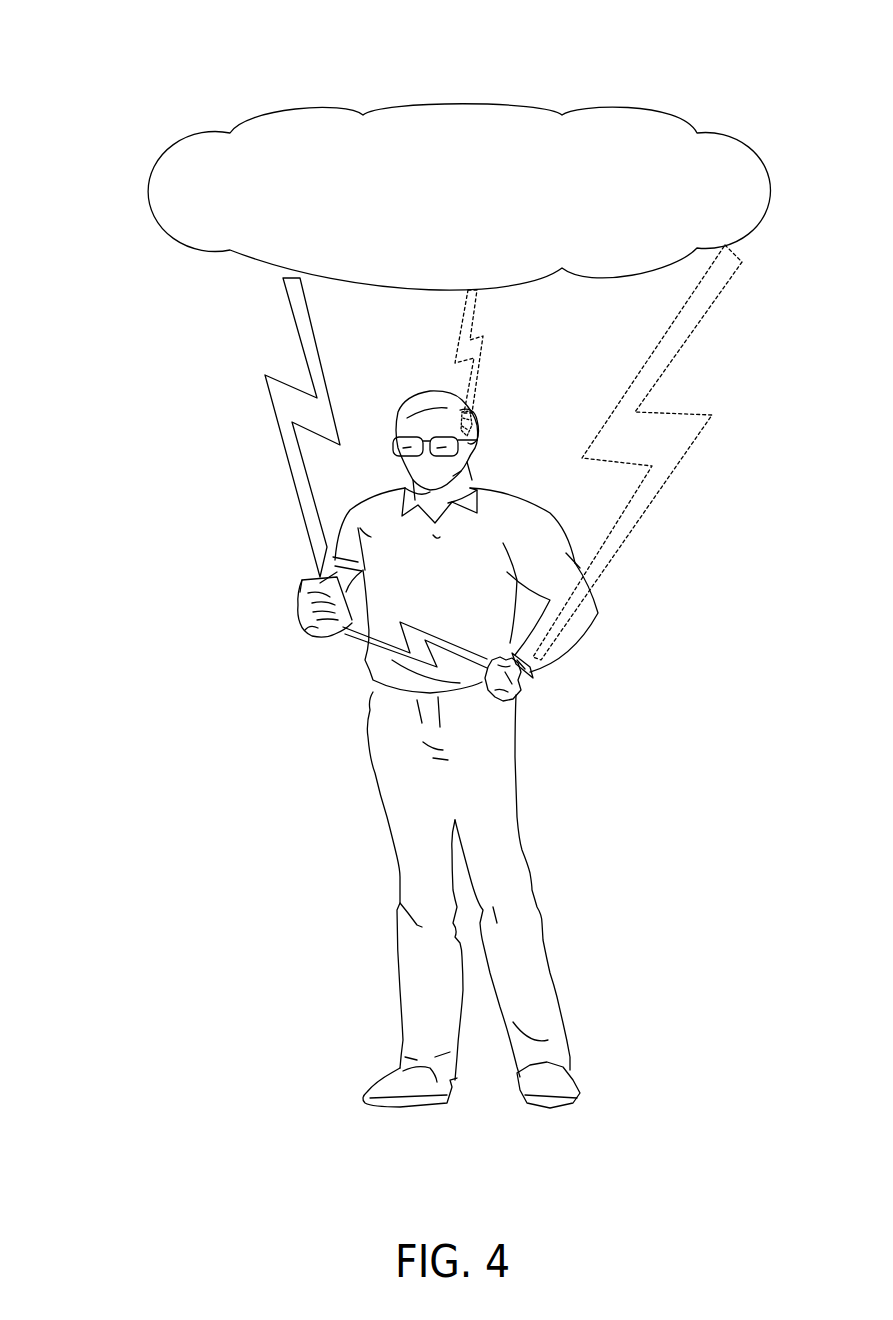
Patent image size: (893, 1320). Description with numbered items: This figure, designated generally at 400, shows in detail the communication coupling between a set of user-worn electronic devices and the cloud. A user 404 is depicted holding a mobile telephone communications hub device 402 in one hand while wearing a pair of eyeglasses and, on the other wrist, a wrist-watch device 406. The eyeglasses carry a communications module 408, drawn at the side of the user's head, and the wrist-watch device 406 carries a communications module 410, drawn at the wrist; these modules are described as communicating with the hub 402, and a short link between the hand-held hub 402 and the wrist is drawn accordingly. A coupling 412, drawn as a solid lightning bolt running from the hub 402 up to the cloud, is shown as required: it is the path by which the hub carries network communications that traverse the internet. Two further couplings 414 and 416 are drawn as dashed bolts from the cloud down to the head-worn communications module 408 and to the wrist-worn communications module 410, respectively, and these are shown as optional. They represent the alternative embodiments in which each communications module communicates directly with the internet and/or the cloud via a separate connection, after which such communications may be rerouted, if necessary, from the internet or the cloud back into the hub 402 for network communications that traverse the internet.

The operating environment 400 is at (130, 72).
The hub 402 is at (312, 578).
The user 404 is at (471, 447).
The wearable device 406 is at (537, 687).
The earpiece 408 is at (470, 414).
The local communication link 410 is at (518, 684).
The coupling 412 is at (319, 358).
The coupling 414 is at (478, 356).
The coupling 416 is at (675, 410).